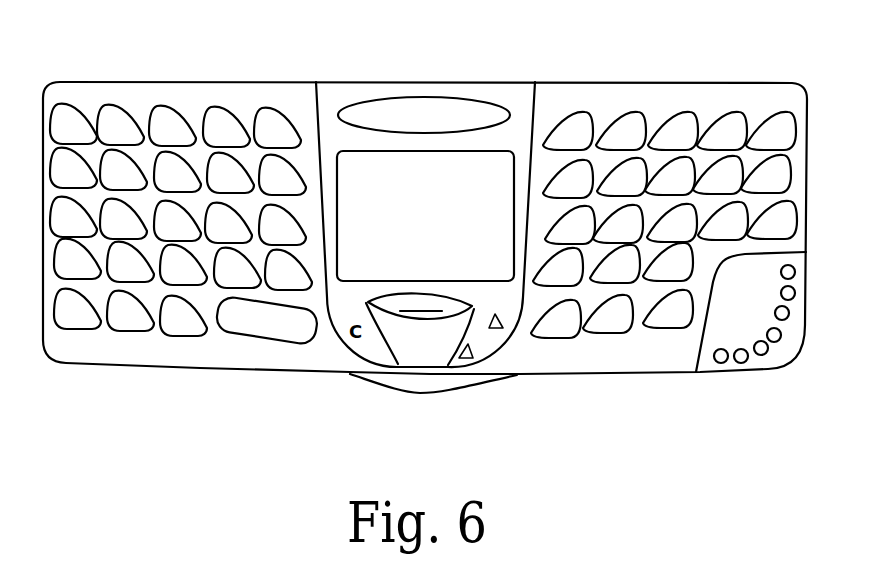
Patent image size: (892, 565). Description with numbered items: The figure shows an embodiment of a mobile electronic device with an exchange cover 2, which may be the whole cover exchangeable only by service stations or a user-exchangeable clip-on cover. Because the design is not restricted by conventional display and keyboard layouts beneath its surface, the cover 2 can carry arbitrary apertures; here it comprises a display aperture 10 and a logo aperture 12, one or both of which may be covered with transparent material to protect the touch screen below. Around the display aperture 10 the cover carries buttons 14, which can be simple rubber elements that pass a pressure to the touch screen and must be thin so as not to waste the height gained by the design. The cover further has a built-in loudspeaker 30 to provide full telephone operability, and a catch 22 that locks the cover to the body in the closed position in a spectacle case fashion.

The exchange cover 2 is at (225, 97).
The display aperture 10 is at (425, 216).
The logo aperture 12 is at (437, 117).
The buttons 14 is at (635, 122).
The catch 22 is at (425, 398).
The loudspeaker 30 is at (760, 355).